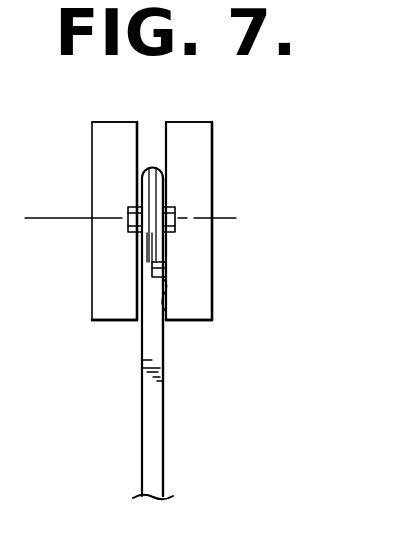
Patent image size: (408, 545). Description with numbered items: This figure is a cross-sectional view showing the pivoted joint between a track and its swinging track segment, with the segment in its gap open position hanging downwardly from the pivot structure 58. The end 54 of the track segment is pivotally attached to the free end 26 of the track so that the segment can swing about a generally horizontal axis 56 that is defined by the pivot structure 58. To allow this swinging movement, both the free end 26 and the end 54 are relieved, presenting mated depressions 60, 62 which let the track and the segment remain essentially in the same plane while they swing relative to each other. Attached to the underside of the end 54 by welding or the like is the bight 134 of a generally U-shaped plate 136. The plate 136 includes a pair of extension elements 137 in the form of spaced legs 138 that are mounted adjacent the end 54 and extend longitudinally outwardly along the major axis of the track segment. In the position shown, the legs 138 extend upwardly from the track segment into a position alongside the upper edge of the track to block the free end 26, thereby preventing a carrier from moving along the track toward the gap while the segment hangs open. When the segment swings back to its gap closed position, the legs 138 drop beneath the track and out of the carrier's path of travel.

The free end of track 26 is at (164, 181).
The end of track segment 54 is at (140, 179).
The horizontal axis 56 is at (35, 218).
The pivot structure 58 is at (172, 215).
The depression 60 is at (166, 265).
The depression 62 is at (150, 257).
The bight 134 is at (177, 321).
The U-shaped plate 136 is at (94, 307).
The extension element 137 is at (92, 135).
The leg 138 is at (116, 120).